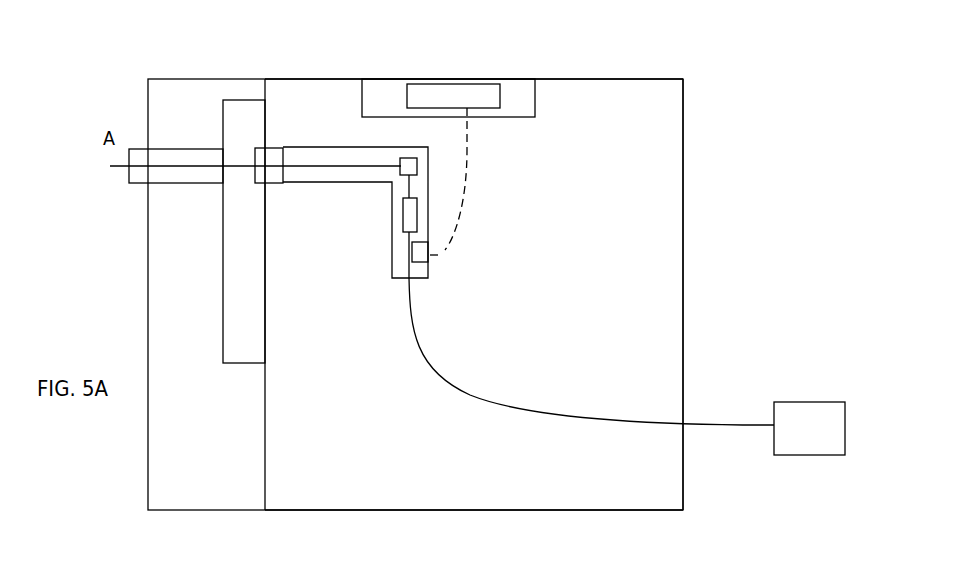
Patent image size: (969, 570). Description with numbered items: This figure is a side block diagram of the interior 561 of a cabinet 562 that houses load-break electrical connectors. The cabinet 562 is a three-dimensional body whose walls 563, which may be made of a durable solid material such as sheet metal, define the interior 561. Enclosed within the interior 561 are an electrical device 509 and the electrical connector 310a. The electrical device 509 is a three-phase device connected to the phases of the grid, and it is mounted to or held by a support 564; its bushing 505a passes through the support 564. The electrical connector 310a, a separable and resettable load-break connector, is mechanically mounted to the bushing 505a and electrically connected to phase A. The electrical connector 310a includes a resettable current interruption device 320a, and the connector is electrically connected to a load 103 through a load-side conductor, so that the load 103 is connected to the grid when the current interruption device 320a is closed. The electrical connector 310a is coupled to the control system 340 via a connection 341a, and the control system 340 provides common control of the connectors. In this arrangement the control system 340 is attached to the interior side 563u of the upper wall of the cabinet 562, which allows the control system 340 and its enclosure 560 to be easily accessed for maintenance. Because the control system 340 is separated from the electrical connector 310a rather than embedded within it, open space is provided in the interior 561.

The load 103 is at (627, 343).
The electrical connector 310a is at (352, 172).
The resettable current interruption device 320a is at (403, 217).
The control system 340 is at (453, 96).
The connection 341a is at (467, 153).
The bushing 505a is at (270, 155).
The electrical device 509 is at (247, 115).
The enclosure 560 is at (383, 97).
The interior 561 is at (449, 463).
The cabinet 562 is at (733, 88).
The walls 563 is at (685, 217).
The interior side 563u is at (643, 80).
The support 564 is at (267, 458).